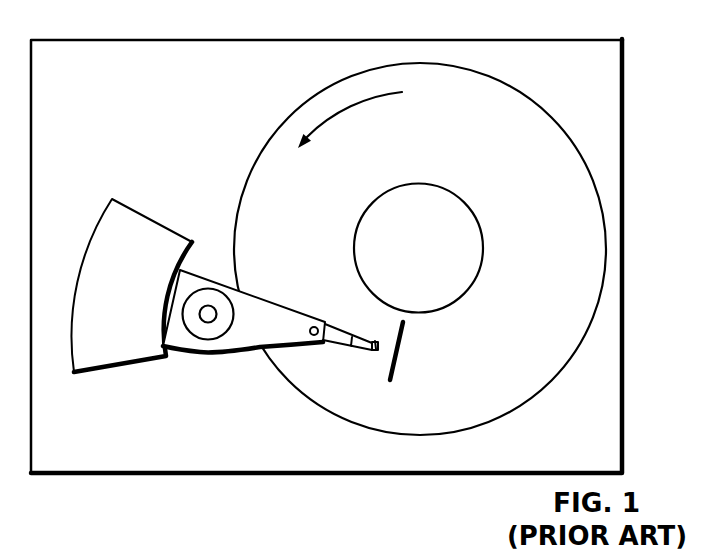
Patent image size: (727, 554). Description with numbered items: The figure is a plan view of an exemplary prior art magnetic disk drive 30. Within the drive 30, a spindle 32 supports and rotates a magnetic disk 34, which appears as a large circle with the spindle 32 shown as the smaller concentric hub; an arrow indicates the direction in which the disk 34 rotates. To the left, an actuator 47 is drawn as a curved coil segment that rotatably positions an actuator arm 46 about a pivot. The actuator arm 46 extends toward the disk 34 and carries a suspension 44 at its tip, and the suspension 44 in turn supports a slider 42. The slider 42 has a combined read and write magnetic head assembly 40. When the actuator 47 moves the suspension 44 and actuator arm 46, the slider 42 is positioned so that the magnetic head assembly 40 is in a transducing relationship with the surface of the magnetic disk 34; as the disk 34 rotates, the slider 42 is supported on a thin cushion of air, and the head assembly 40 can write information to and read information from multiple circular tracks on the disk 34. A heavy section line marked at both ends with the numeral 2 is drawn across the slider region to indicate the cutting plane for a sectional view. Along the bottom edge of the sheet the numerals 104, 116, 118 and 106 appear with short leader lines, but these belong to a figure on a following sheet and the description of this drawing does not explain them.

The magnetic disk drive 30 is at (644, 37).
The spindle 32 is at (441, 185).
The magnetic disk 34 is at (537, 248).
The magnetic head assembly 40 is at (378, 351).
The slider 42 is at (376, 340).
The suspension 44 is at (337, 345).
The actuator arm 46 is at (252, 296).
The actuator 47 is at (145, 216).
The section line 2- 2 is at (420, 335).
The component of following figure 104 is at (141, 553).
The component of following figure 116 is at (177, 553).
The component of following figure 118 is at (280, 553).
The component of following figure 106 is at (315, 553).